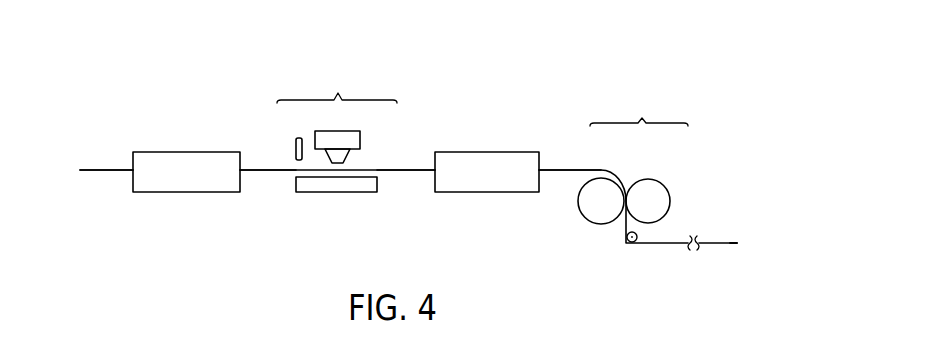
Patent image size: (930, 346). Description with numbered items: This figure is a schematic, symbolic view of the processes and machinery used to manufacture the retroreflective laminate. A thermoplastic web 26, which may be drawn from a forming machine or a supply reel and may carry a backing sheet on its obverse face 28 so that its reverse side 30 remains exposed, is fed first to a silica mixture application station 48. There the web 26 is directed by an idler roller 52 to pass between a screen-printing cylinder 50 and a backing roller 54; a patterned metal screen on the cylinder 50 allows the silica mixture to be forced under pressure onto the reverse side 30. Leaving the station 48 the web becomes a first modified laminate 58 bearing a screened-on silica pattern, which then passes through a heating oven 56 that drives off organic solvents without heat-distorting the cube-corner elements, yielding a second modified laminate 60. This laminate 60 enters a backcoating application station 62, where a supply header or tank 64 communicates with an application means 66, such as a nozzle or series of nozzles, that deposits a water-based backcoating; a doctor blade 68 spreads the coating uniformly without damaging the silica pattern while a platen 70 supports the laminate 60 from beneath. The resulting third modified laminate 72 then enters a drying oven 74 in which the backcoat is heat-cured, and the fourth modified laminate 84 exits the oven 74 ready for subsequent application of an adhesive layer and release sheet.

The thermoplastic web 26 is at (663, 242).
The obverse face 28 is at (737, 245).
The reverse side 30 is at (737, 242).
The silica mixture application station 48 is at (639, 109).
The screen-printing cylinder 50 is at (665, 207).
The idler roller 52 is at (632, 245).
The backing roller 54 is at (593, 213).
The heating oven 56 is at (485, 152).
The first modified laminate 58 is at (563, 170).
The second modified laminate 60 is at (407, 172).
The backcoating application station 62 is at (337, 85).
The supply header 64 is at (360, 140).
The application means 66 is at (327, 152).
The doctor blade 68 is at (295, 153).
The platen 70 is at (353, 185).
The third modified laminate 72 is at (265, 170).
The drying oven 74 is at (167, 152).
The fourth modified laminate 84 is at (97, 173).